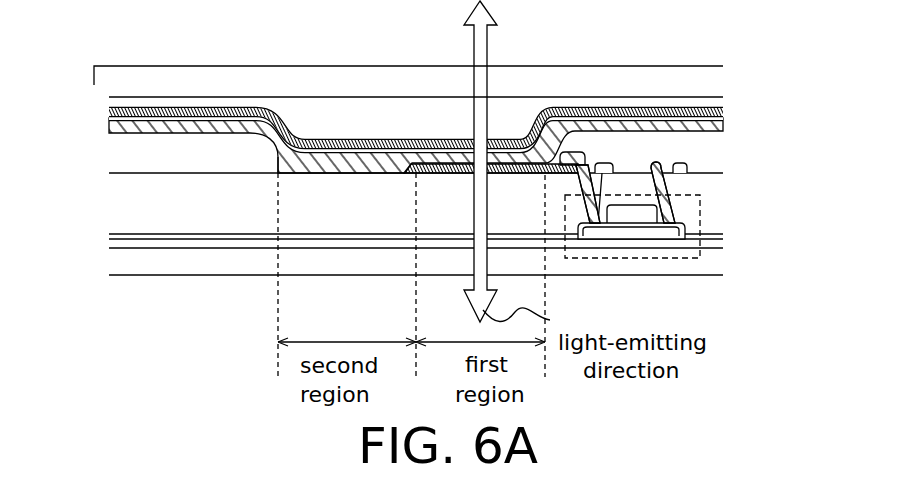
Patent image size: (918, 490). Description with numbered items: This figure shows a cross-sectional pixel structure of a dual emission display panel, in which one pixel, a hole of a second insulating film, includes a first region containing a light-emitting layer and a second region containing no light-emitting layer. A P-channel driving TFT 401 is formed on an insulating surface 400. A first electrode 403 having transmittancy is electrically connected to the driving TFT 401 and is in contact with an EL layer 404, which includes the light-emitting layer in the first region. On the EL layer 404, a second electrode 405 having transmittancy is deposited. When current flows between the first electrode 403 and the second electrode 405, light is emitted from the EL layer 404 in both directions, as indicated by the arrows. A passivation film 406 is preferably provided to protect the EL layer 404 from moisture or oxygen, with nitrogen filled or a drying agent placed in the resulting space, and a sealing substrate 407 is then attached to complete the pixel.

The insulating surface 400 is at (208, 267).
The P-channel driving TFT 401 is at (700, 258).
The first electrode 403 is at (450, 177).
The EL layer 404 is at (408, 142).
The second electrode 405 is at (672, 115).
The passivation film 406 is at (158, 110).
The sealing substrate 407 is at (577, 83).